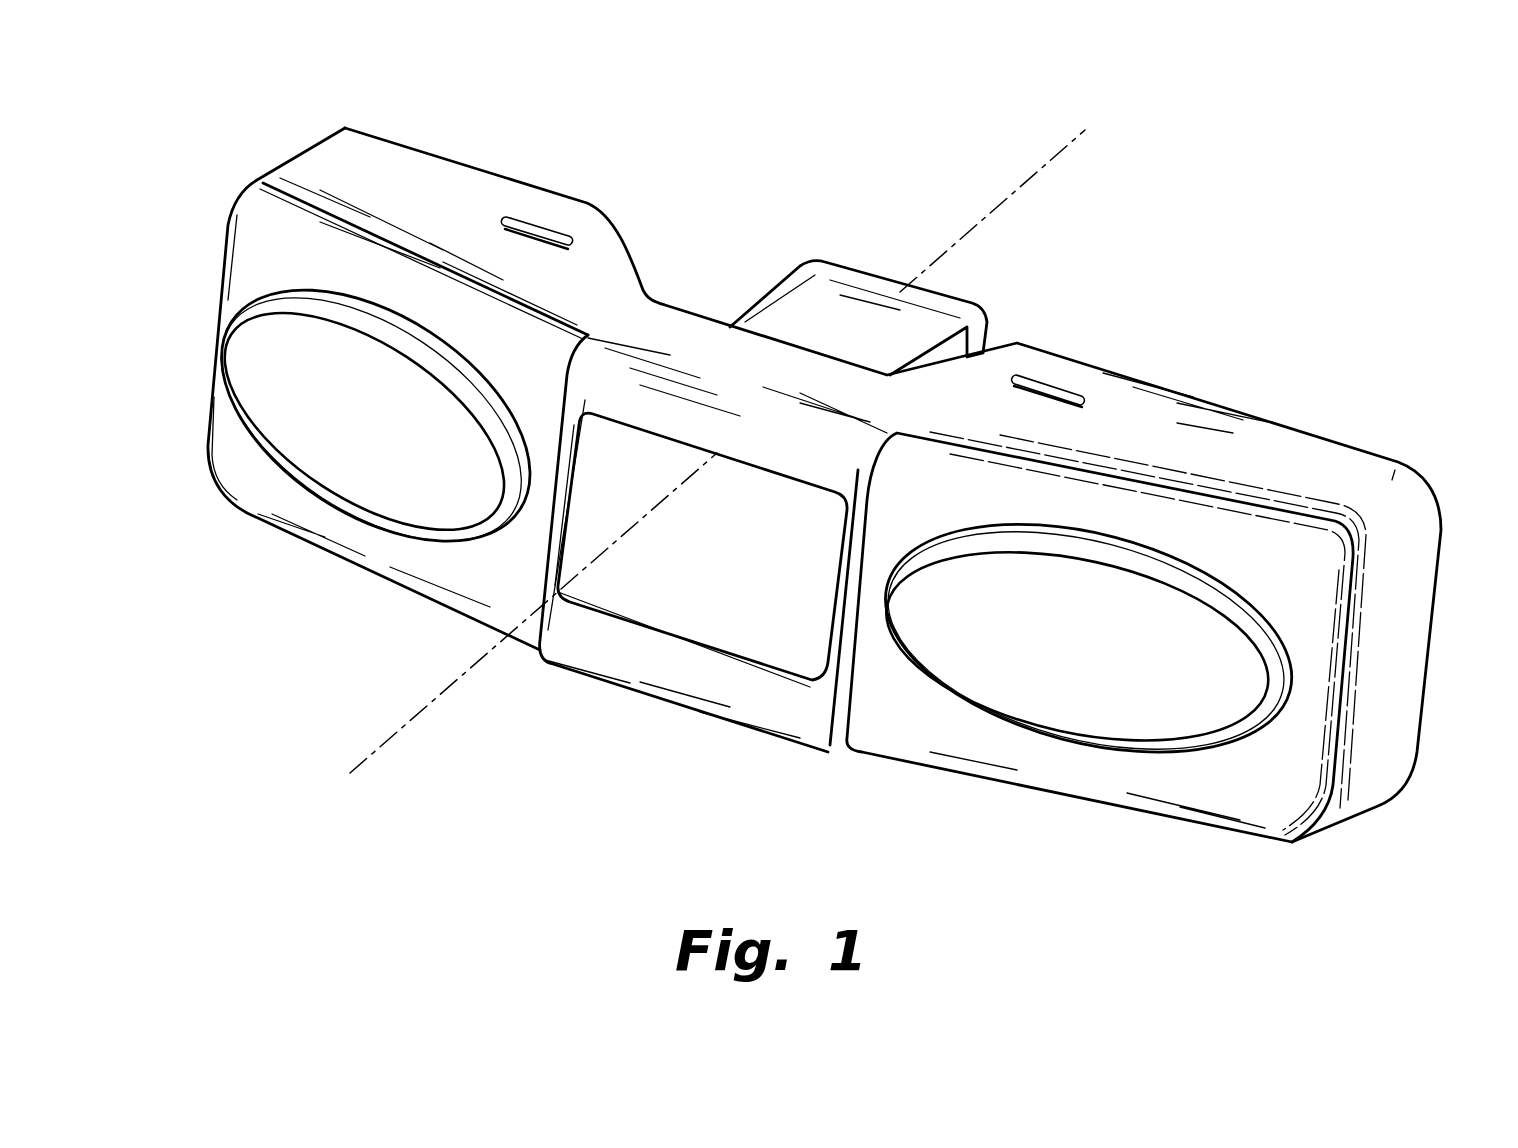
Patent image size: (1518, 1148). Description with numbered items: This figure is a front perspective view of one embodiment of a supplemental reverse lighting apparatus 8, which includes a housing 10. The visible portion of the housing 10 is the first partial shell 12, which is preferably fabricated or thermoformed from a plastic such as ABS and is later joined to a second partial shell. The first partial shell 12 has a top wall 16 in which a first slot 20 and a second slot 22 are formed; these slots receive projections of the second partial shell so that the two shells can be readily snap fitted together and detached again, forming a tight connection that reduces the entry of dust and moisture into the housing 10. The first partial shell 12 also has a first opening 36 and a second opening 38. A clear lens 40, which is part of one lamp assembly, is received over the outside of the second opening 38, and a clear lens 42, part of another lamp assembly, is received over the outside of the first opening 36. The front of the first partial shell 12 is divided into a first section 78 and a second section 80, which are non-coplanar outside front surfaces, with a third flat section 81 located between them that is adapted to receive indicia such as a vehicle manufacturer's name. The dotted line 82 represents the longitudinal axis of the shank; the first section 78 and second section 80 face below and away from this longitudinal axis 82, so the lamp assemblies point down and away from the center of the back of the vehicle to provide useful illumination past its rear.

The supplemental reverse lighting apparatus 8 is at (1248, 210).
The housing 10 is at (1037, 350).
The first partial shell 12 is at (1380, 685).
The top wall 16 is at (1323, 473).
The first slot 20 is at (538, 227).
The second slot 22 is at (1060, 393).
The first opening 36 is at (1245, 752).
The second opening 38 is at (276, 293).
The clear lens 40 is at (373, 425).
The clear lens 42 is at (1000, 623).
The first section 78 is at (513, 568).
The second section 80 is at (883, 680).
The third flat section 81 is at (755, 556).
The longitudinal axis 82 is at (988, 213).